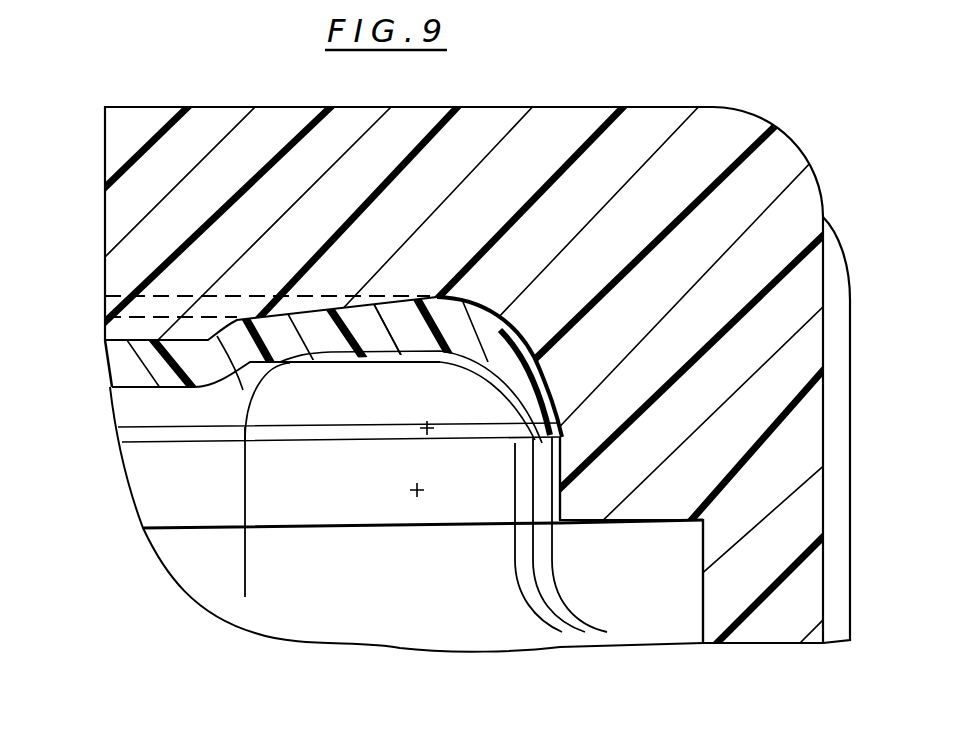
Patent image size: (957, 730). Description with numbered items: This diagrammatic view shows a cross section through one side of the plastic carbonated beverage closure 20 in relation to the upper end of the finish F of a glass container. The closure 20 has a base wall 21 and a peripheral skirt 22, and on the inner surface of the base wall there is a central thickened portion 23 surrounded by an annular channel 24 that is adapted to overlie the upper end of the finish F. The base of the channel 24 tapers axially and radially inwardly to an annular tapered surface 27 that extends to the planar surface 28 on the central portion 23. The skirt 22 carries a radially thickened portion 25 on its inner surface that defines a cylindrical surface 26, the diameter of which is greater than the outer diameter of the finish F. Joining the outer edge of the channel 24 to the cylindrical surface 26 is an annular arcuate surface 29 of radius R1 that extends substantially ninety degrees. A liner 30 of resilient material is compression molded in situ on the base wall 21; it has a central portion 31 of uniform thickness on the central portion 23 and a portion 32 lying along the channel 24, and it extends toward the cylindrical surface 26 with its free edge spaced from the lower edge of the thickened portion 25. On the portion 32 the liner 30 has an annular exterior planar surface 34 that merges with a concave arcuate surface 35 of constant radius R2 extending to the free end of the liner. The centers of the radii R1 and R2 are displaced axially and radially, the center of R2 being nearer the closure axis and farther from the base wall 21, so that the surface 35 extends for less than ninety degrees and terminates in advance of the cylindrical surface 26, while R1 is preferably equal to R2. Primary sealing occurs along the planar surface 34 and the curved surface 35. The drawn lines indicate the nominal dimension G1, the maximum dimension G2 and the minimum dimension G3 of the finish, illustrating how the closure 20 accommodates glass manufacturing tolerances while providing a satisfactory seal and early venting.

The closure 20 is at (667, 87).
The base wall 21 is at (493, 103).
The peripheral skirt 22 is at (788, 627).
The central thickened portion 23 is at (120, 268).
The annular channel 24 is at (308, 315).
The radially thickened portion 25 is at (630, 483).
The cylindrical surface 26 is at (560, 500).
The annular tapered surface 27 is at (216, 378).
The planar surface 28 is at (105, 366).
The annular arcuate surface 29 is at (487, 312).
The liner 30 is at (146, 393).
The central portion of liner 31 is at (120, 390).
The liner portion along channel 32 is at (383, 333).
The annular exterior planar surface 34 is at (310, 360).
The arcuate surface of liner 35 is at (472, 375).
The finish F is at (243, 492).
The radius of the arcuate surface of the closure R1 is at (452, 410).
The radius of the arcuate surface of the liner R2 is at (528, 372).
The nominal dimension G1 is at (582, 637).
The maximum dimension G2 is at (568, 596).
The minimum dimension G3 is at (540, 612).